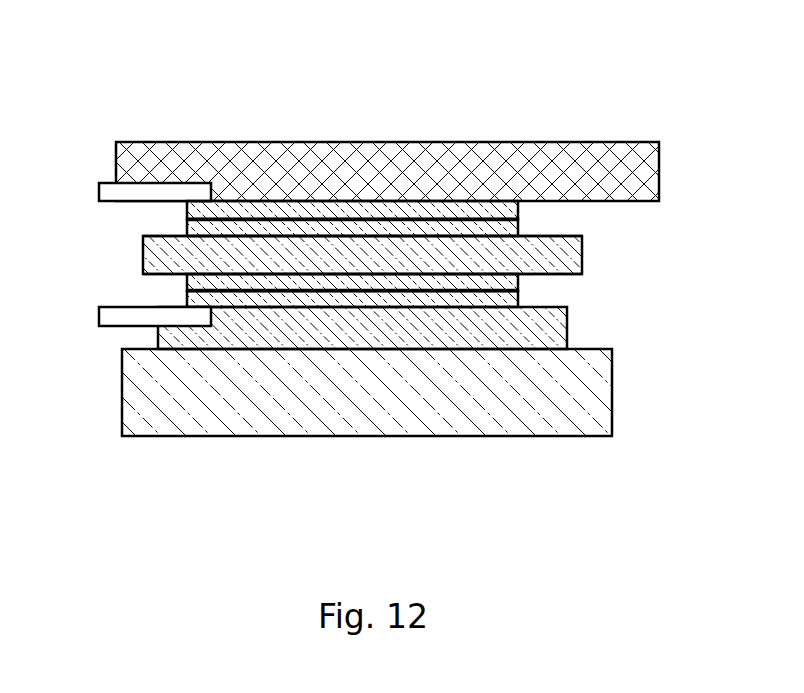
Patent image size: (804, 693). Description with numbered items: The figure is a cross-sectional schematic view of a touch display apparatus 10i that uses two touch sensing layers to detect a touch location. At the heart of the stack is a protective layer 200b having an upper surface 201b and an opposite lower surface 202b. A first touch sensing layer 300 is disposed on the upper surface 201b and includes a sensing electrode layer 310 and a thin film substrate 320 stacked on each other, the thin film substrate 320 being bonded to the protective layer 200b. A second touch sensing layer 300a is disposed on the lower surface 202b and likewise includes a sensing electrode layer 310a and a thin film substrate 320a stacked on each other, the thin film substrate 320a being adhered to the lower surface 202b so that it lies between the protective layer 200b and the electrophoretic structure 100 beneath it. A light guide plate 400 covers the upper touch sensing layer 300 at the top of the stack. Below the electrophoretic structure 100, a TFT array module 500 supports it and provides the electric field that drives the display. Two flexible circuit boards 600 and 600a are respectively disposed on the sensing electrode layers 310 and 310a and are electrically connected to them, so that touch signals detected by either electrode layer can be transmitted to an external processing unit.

The touch display apparatus 10i is at (70, 31).
The electrophoretic structure 100 is at (550, 327).
The protective layer 200b is at (563, 258).
The upper surface 201b is at (163, 233).
The lower surface 202b is at (163, 278).
The touch sensing layer 300 is at (392, 137).
The sensing electrode layer 310 is at (436, 210).
The thin film substrate 320 is at (483, 227).
The touch sensing layer 300a is at (393, 411).
The sensing electrode layer 310a is at (470, 300).
The thin film substrate 320a is at (433, 281).
The light guide plate 400 is at (632, 173).
The TFT array module 500 is at (588, 400).
The flexible circuit board 600 is at (160, 190).
The flexible circuit board 600a is at (113, 320).